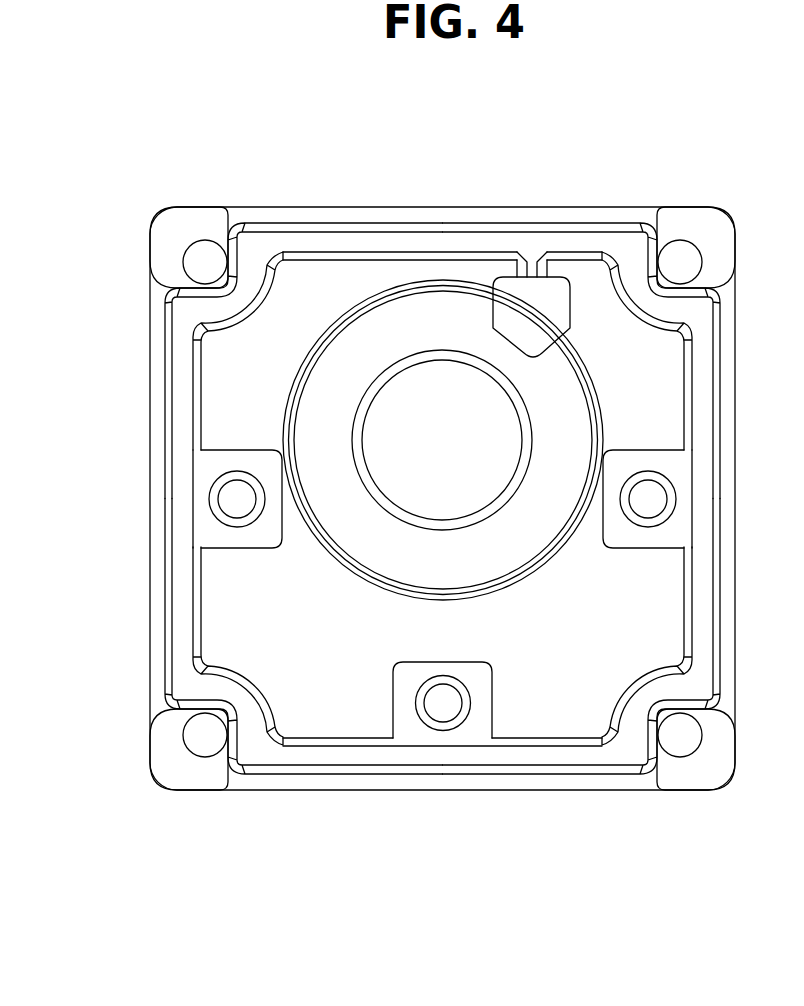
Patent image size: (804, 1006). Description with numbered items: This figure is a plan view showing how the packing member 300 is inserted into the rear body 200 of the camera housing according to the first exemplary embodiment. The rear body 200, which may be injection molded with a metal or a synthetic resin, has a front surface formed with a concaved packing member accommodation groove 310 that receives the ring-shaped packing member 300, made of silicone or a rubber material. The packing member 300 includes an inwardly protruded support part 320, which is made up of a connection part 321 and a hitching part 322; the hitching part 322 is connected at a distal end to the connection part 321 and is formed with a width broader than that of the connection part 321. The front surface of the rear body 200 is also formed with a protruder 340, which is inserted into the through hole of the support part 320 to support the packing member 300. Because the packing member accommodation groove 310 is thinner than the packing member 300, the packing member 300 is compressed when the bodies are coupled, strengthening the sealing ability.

The rear body 200 is at (160, 251).
The packing member 300 is at (378, 240).
The packing member accommodation groove 310 is at (177, 358).
The support part 320 is at (523, 468).
The connection part 321 is at (529, 251).
The hitching part 322 is at (533, 315).
The protruder 340 is at (443, 712).